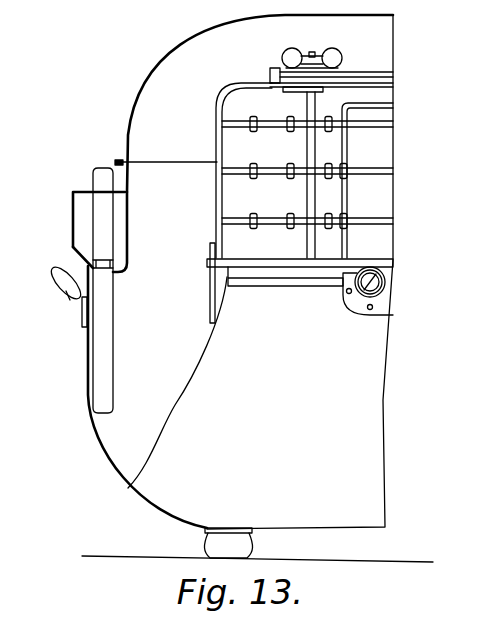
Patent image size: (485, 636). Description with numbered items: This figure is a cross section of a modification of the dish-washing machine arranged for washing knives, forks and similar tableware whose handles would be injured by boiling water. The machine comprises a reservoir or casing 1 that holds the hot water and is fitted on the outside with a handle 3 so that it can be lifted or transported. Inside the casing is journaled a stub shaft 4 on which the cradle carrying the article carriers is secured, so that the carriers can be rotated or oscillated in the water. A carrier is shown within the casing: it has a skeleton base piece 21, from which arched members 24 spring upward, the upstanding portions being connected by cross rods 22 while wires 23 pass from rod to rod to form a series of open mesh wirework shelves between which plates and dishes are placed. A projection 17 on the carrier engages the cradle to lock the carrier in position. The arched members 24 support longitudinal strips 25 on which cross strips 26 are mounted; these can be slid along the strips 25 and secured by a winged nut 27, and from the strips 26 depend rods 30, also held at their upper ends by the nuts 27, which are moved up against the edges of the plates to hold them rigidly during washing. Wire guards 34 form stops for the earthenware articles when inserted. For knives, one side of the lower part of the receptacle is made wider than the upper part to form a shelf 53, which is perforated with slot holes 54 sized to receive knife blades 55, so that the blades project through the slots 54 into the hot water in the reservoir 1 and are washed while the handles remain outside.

The reservoir or casing 1 is at (257, 288).
The handle 3 is at (66, 295).
The stub shaft 4 is at (385, 284).
The projection 17 is at (210, 266).
The skeleton base piece 21 is at (285, 267).
The cross rod 22 is at (272, 175).
The wire 23 is at (288, 229).
The arched member 24 is at (218, 133).
The longitudinal strip 25 is at (271, 78).
The cross strip 26 is at (360, 73).
The winged nut 27 is at (340, 53).
The rod 30 is at (310, 100).
The wire guard 34 is at (352, 250).
The shelf 53 is at (124, 264).
The slot hole 54 is at (99, 272).
The knife blade 55 is at (104, 391).